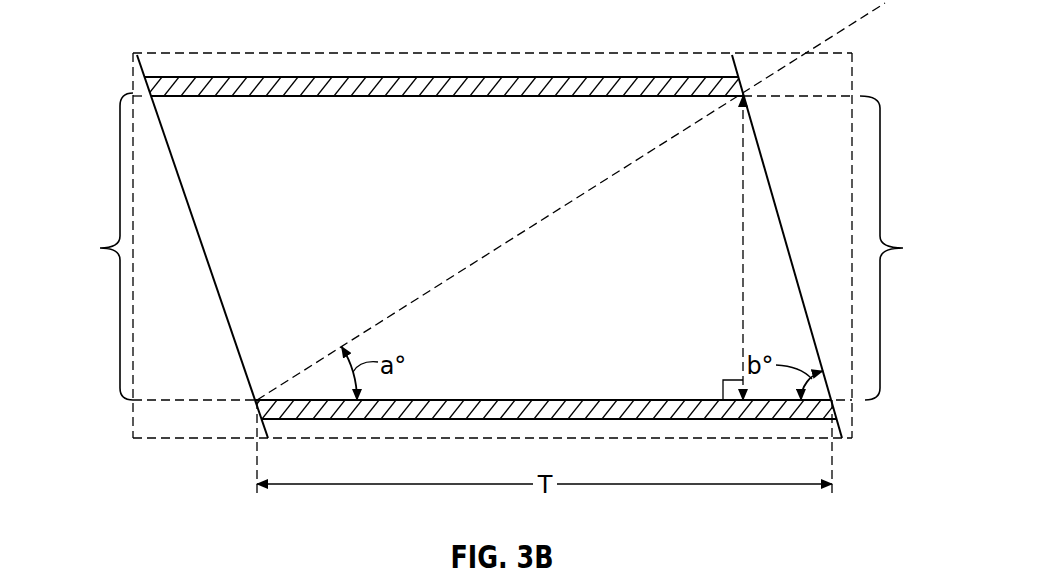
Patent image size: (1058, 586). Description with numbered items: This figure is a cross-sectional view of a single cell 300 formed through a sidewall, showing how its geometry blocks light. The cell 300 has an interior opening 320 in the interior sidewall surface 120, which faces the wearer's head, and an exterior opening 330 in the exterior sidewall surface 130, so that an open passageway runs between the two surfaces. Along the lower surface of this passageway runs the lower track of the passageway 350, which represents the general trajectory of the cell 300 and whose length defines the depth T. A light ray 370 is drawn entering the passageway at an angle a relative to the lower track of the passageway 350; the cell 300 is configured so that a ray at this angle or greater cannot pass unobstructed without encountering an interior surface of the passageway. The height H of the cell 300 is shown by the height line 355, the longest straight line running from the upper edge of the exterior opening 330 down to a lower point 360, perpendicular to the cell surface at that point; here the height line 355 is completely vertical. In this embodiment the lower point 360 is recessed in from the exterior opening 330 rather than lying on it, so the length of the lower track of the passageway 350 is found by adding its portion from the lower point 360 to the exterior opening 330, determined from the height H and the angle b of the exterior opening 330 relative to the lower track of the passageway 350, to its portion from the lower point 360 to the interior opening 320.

The cell 300 is at (303, 112).
The interior sidewall surface 120 is at (134, 66).
The exterior sidewall surface 130 is at (741, 71).
The interior opening 320 is at (93, 246).
The exterior opening 330 is at (906, 248).
The lower track of the passageway 350 is at (556, 400).
The height line 355 is at (743, 197).
The lower point 360 is at (746, 420).
The light ray 370 is at (857, 24).